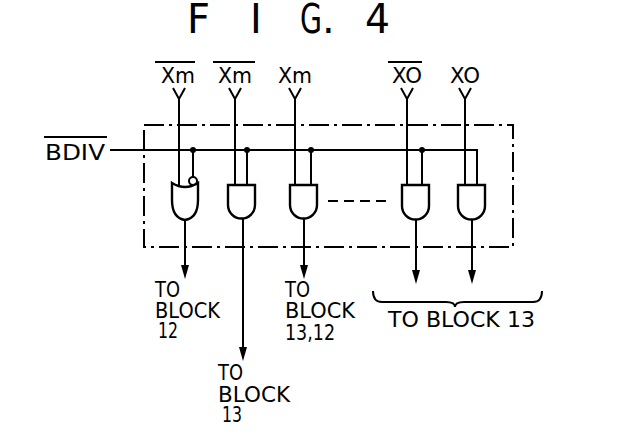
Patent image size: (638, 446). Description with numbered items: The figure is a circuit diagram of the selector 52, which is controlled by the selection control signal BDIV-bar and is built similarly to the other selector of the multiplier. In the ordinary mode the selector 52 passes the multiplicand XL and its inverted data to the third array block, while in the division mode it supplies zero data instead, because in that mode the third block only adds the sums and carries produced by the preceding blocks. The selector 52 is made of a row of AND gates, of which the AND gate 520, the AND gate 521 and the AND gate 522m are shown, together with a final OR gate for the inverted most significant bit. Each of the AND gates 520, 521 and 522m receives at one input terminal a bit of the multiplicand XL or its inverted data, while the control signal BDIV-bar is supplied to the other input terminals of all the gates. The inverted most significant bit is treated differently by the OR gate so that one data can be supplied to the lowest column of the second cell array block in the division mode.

The selector 52 is at (330, 124).
The AND gate 520 is at (485, 206).
The AND gate 521 is at (402, 200).
The AND gate 522m is at (291, 204).